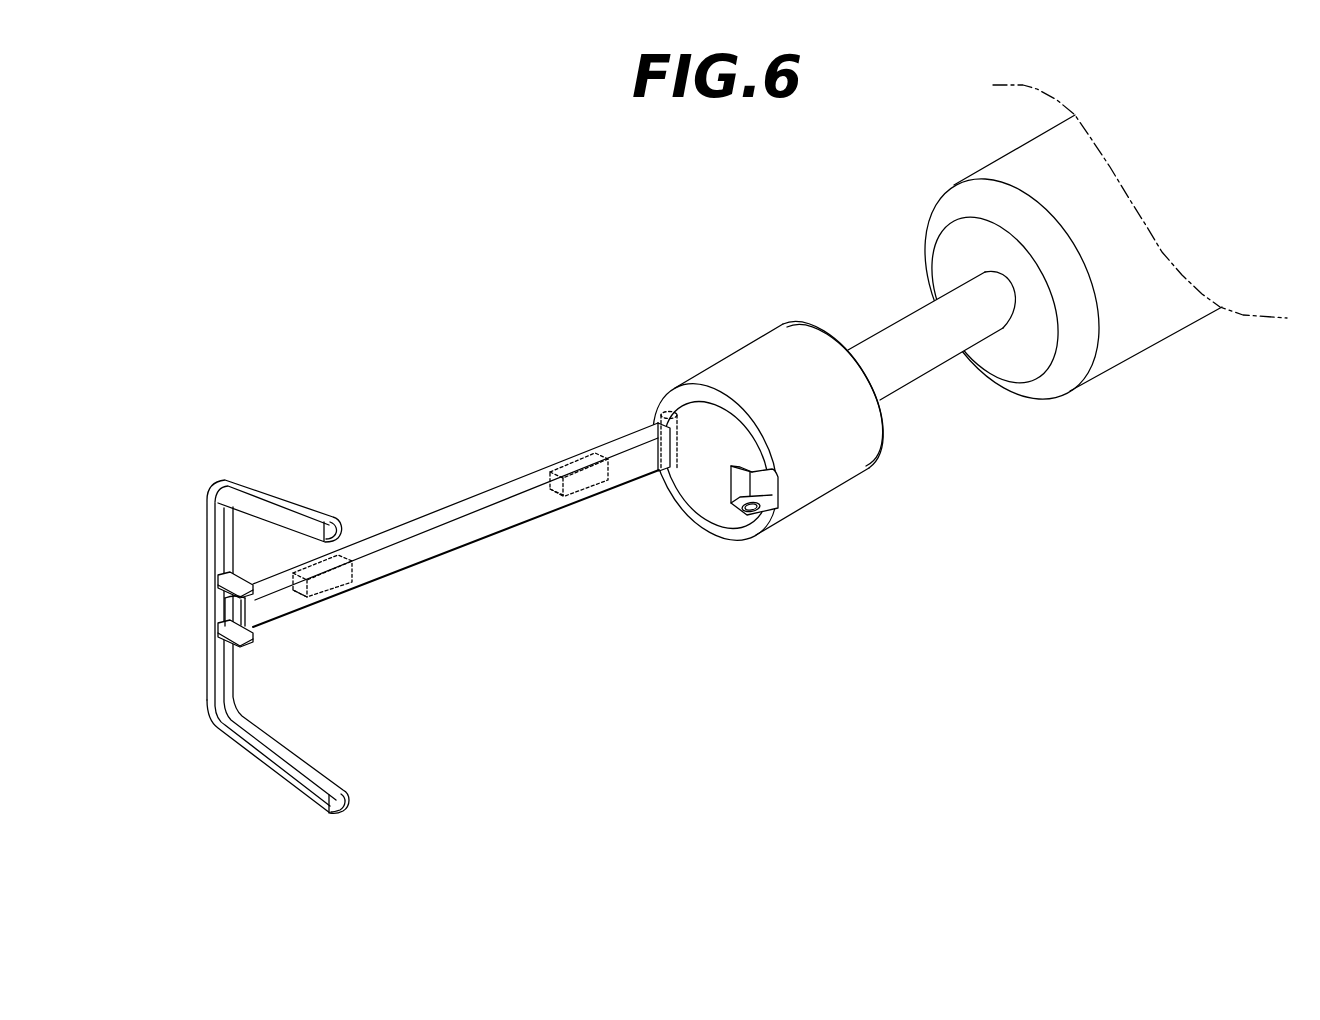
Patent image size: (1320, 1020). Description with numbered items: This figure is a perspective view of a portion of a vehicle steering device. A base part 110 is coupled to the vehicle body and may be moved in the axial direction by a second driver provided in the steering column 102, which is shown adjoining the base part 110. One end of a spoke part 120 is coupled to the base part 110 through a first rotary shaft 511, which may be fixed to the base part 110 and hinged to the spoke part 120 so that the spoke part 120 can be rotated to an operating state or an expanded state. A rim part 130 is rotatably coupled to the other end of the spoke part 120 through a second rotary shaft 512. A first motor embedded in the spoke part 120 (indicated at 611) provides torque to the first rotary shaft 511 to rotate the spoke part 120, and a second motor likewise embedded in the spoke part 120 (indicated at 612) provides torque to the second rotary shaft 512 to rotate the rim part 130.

The steering column 102 is at (1008, 176).
The base part 110 is at (747, 366).
The spoke part 120 is at (456, 525).
The rim part 130 is at (268, 748).
The first rotary shaft 511 is at (656, 418).
The second rotary shaft 512 is at (227, 607).
The first motor embedded in the spoke part 611 is at (587, 487).
The second motor embedded in the spoke part 612 is at (330, 590).